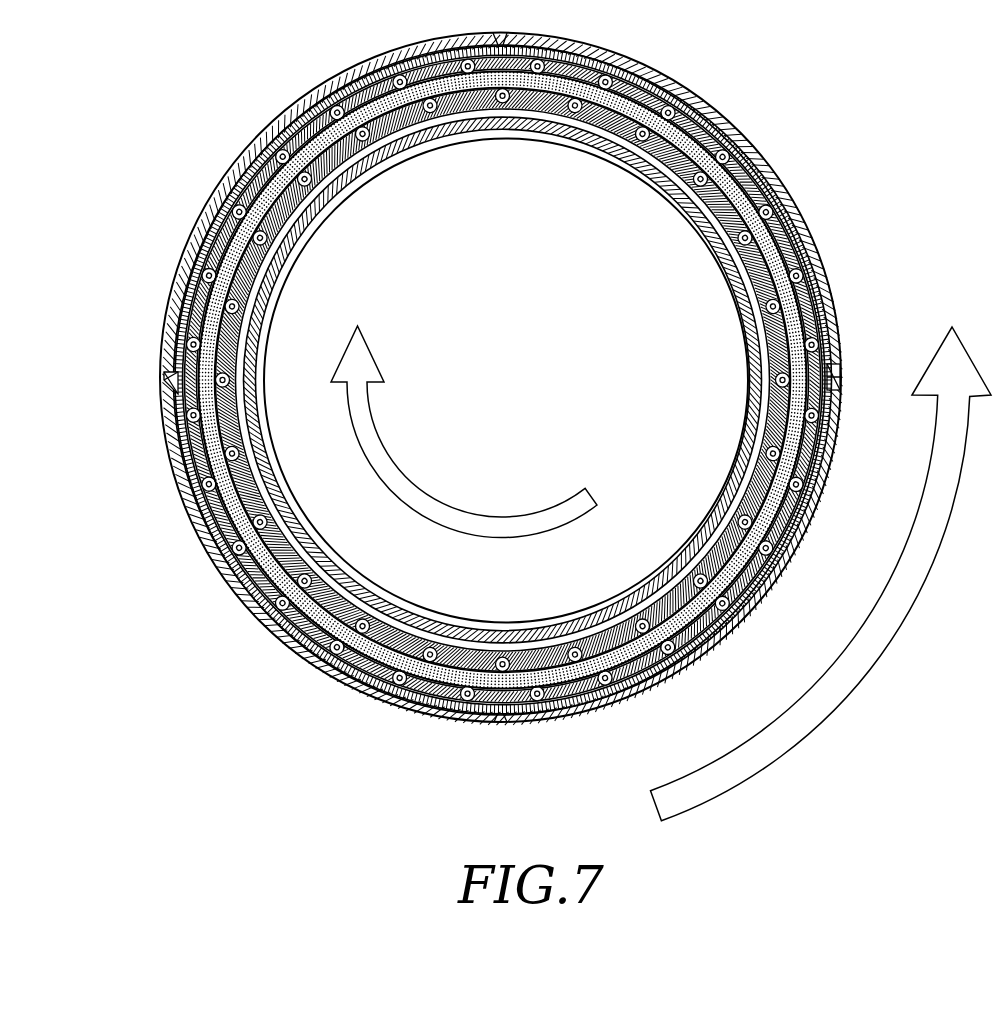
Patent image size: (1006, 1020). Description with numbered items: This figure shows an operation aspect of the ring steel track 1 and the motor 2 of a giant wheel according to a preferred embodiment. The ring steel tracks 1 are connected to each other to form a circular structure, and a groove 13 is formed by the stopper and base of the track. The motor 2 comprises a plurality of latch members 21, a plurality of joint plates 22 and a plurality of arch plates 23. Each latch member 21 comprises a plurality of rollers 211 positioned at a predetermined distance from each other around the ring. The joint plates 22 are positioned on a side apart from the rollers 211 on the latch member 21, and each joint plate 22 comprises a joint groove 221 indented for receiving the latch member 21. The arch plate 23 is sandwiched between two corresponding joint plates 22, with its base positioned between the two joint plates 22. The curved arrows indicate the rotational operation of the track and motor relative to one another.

The ring steel track 1 is at (217, 448).
The groove 13 is at (220, 516).
The motor 2 is at (272, 84).
The latch member 21 is at (290, 207).
The roller 211 is at (228, 197).
The joint plate 22 is at (170, 303).
The joint groove 221 is at (166, 362).
The arch plate 23 is at (182, 258).